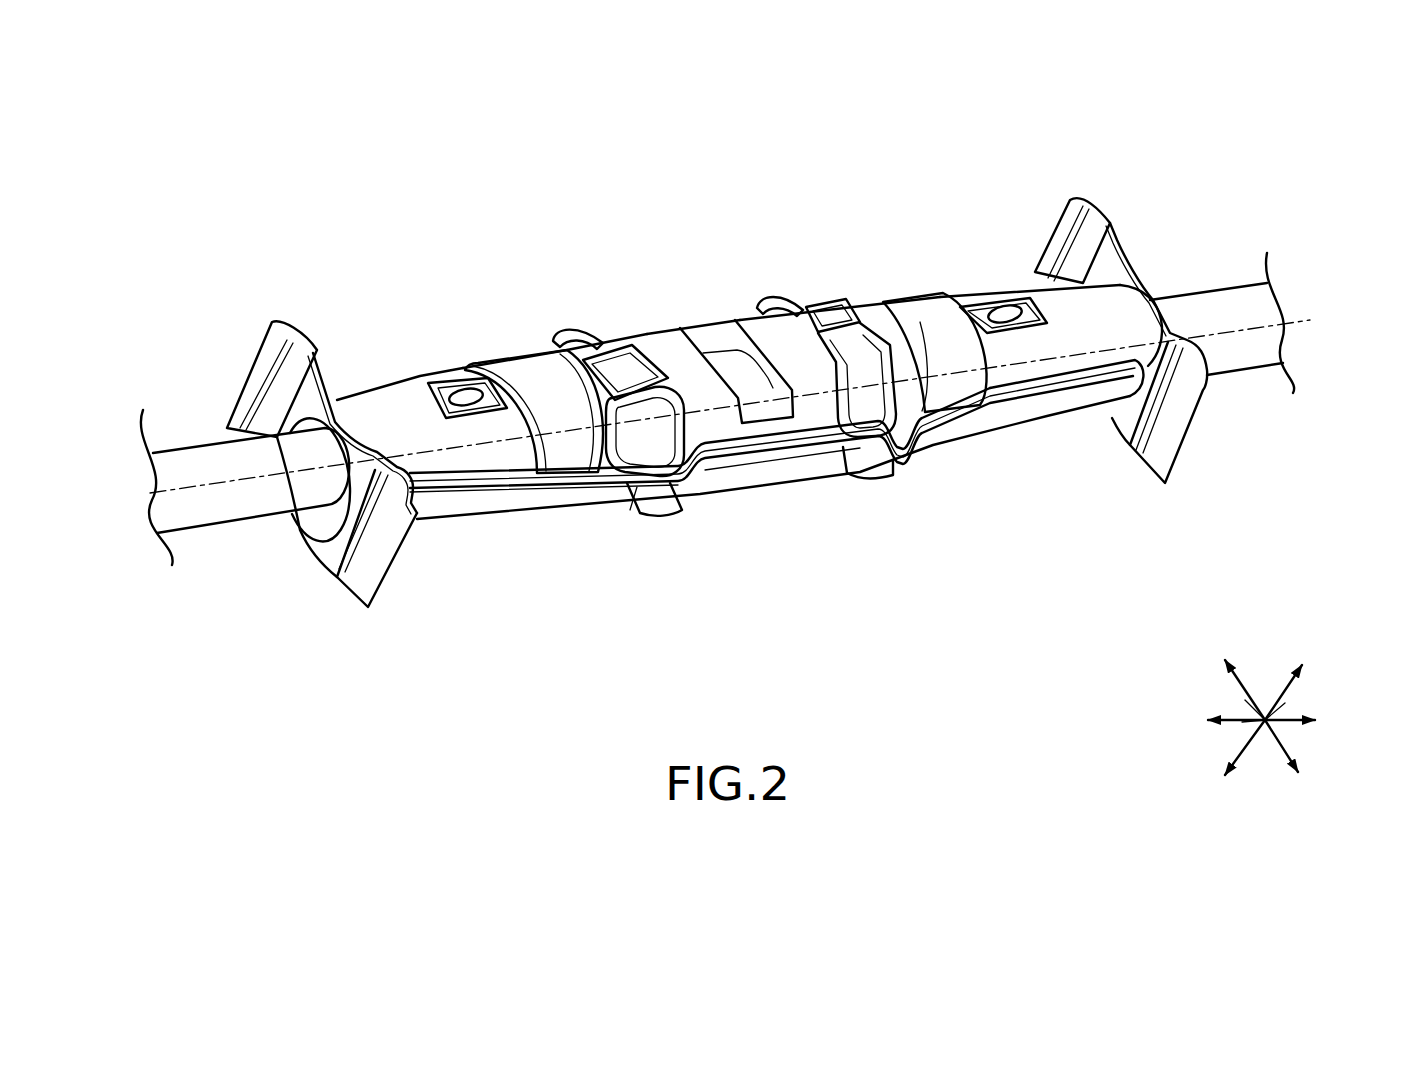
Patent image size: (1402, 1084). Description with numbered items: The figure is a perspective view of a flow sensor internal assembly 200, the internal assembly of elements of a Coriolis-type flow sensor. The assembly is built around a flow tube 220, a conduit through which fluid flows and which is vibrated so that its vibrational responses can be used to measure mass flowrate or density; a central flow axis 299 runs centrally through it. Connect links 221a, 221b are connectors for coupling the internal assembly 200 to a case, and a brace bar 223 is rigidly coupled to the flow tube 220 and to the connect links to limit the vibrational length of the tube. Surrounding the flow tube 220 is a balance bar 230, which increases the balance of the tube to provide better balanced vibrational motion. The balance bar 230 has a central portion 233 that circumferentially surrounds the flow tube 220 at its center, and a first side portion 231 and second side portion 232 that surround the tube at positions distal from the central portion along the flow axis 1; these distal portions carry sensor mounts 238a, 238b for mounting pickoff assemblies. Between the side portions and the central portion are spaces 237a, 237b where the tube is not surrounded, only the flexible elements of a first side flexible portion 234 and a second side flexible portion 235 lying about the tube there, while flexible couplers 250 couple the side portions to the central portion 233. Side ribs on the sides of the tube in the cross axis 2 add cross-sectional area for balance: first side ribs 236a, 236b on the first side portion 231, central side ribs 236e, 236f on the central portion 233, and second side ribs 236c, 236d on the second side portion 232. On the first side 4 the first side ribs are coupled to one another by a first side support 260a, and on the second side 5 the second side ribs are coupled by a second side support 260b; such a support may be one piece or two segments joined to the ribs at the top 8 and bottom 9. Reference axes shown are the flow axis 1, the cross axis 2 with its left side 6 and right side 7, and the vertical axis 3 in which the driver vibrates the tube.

The flow sensor internal assembly 200 is at (997, 150).
The flow tube 220 is at (1213, 298).
The connect link 221a is at (357, 602).
The connect link 221b is at (1150, 490).
The brace bar 223 is at (320, 518).
The balance bar 230 is at (438, 562).
The first side portion 231 is at (456, 472).
The second side portion 232 is at (1019, 357).
The central portion 233 is at (706, 320).
The first side flexible portion 234 is at (702, 524).
The second side flexible portion 235 is at (913, 487).
The first side rib 236a is at (530, 483).
The first side rib 236b is at (444, 362).
The second side rib 236c is at (951, 421).
The second side rib 236d is at (946, 292).
The central side rib 236e is at (803, 480).
The central side rib 236f is at (652, 326).
The space 237a is at (632, 432).
The space 237b is at (803, 305).
The sensor mount 238a is at (428, 386).
The sensor mount 238b is at (985, 303).
The flexible coupler 250 is at (557, 325).
The first side support 260a is at (525, 368).
The second side support 260b is at (916, 300).
The central flow axis 299 is at (1255, 332).
The flow axis 1 is at (1240, 725).
The cross axis 2 is at (1240, 702).
The vertical axis 3 is at (1283, 703).
The first side 4 is at (1207, 725).
The second side 5 is at (1325, 720).
The left side 6 is at (1245, 658).
The right side 7 is at (1297, 780).
The top 8 is at (1305, 660).
The bottom 9 is at (1227, 780).